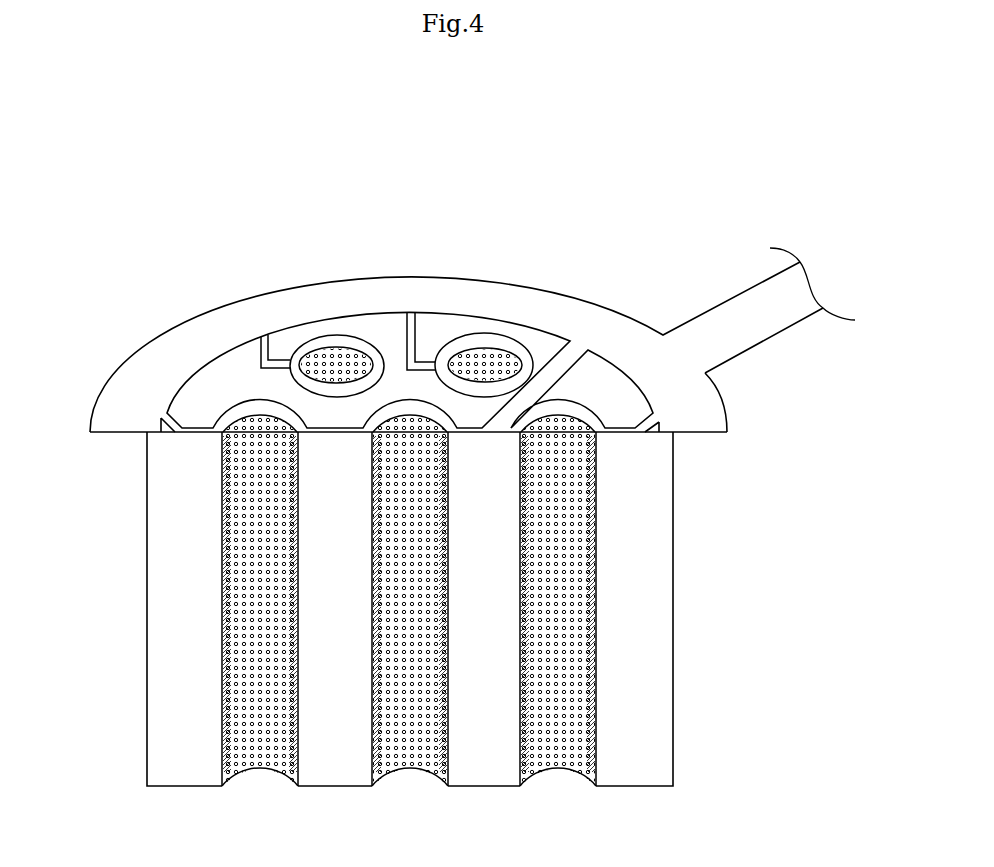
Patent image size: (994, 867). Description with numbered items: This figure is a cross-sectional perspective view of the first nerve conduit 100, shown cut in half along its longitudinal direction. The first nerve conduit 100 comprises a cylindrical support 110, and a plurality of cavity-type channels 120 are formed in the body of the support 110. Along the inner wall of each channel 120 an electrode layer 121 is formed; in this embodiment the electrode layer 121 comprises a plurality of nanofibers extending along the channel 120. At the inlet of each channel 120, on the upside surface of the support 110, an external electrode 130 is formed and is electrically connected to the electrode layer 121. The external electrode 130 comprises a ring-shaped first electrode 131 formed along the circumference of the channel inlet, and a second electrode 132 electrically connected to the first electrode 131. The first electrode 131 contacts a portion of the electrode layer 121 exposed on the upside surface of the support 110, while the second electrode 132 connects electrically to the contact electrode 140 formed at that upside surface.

The first nerve conduit 100 is at (128, 211).
The cylindrical support 110 is at (157, 678).
The channel 120 is at (322, 527).
The electrode layer 121 is at (222, 522).
The external electrode 130 is at (337, 304).
The first electrode 131 is at (332, 343).
The second electrode 132 is at (263, 347).
The contact electrode 140 is at (223, 327).